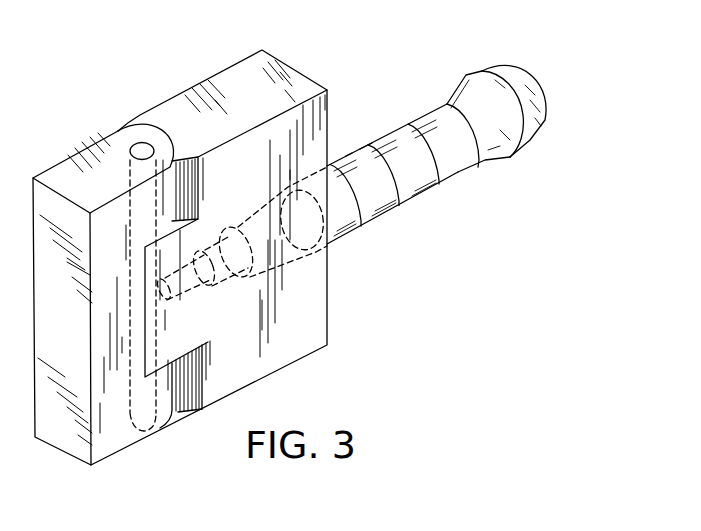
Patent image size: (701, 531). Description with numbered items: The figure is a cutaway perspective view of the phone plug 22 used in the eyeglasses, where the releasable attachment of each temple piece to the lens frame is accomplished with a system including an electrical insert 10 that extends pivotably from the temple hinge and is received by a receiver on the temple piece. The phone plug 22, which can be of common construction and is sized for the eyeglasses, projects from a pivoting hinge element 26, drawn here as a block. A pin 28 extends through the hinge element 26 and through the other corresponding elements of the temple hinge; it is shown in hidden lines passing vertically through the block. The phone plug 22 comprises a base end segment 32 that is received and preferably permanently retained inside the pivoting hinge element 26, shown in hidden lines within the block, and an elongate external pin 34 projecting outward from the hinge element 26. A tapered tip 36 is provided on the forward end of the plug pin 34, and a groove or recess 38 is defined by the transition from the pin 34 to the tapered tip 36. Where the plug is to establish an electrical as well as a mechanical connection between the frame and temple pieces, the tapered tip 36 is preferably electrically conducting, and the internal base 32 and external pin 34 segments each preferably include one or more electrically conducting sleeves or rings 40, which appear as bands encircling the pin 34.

The electrical insert 10 is at (352, 150).
The phone plug 22 is at (452, 188).
The pivoting hinge element 26 is at (260, 367).
The pin 28 is at (144, 404).
The base end segment 32 is at (290, 250).
The external pin 34 is at (373, 140).
The tapered tip 36 is at (538, 131).
The groove or recess 38 is at (487, 74).
The electrically conducting sleeves or rings 40 is at (413, 184).